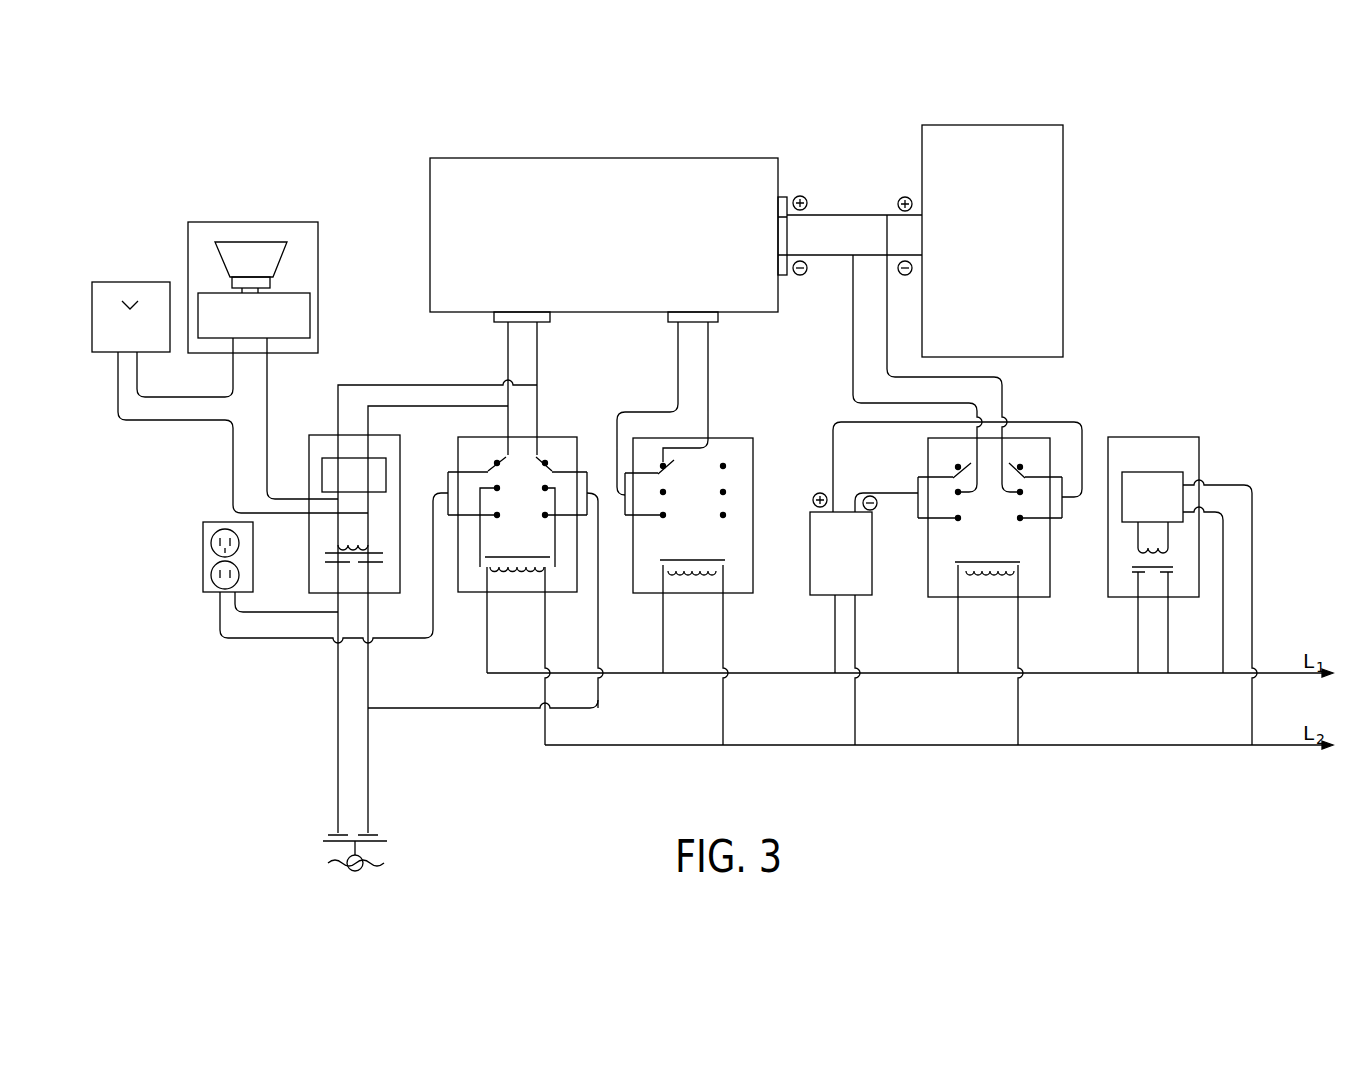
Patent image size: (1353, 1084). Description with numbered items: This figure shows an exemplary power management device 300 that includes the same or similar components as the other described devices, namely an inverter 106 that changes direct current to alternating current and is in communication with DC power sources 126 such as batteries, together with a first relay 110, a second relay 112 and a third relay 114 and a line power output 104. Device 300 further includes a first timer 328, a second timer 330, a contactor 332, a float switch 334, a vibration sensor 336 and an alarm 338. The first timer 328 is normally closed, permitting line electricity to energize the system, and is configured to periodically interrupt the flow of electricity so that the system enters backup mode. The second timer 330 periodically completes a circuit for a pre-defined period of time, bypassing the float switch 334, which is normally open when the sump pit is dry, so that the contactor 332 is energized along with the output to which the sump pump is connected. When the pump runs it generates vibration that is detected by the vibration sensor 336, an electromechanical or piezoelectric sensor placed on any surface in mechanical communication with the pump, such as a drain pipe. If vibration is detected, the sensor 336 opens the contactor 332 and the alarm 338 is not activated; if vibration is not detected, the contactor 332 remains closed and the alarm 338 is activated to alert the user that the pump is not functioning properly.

The device 300 is at (1174, 152).
The inverter 106 is at (547, 156).
The DC power sources 126 is at (1065, 244).
The first relay 110 is at (550, 552).
The second relay 112 is at (735, 548).
The third relay 114 is at (1015, 552).
The first timer 328 is at (1180, 482).
The second timer 330 is at (382, 467).
The contactor 332 is at (310, 318).
The float switch 334 is at (385, 838).
The vibration sensor 336 is at (118, 279).
The alarm 338 is at (277, 260).
The line power output 104 is at (203, 535).